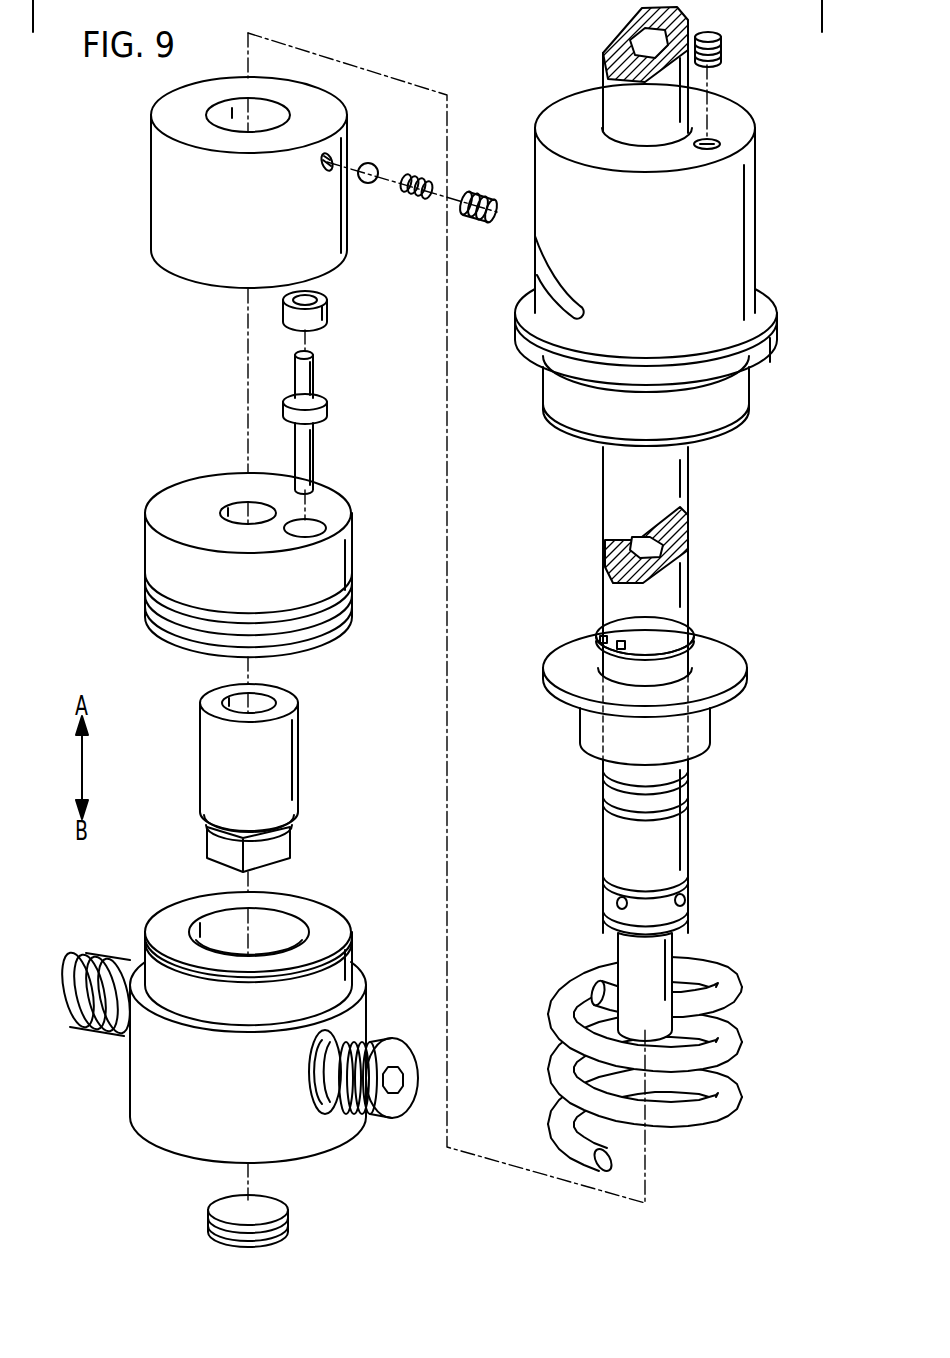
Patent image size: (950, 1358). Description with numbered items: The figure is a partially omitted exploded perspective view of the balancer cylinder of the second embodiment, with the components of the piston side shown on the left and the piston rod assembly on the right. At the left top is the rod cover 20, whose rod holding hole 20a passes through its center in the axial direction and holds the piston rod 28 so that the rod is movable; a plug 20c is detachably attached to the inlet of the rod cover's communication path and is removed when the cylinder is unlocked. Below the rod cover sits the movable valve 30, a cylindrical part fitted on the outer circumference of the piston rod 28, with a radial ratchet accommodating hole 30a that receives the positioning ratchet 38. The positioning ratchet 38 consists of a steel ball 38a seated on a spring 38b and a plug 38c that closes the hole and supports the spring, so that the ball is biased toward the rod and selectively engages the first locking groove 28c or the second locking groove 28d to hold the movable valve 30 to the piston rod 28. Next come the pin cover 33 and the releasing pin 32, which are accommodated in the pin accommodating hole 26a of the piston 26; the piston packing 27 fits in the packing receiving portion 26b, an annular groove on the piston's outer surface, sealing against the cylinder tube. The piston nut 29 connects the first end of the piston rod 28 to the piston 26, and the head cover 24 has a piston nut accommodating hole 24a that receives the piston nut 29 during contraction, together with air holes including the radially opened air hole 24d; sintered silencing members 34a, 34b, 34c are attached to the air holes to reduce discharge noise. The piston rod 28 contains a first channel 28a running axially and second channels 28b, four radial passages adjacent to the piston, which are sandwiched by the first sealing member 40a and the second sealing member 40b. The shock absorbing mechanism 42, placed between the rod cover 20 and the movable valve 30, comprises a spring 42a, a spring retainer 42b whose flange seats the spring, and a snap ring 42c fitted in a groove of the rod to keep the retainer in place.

The rod cover 20 is at (757, 148).
The rod holding hole 20a is at (590, 120).
The plug 20c is at (722, 52).
The head cover 24 is at (226, 1025).
The piston nut accommodating hole 24a is at (290, 928).
The air hole 24d is at (327, 1092).
The piston 26 is at (259, 563).
The pin accommodating hole 26a is at (318, 525).
The packing receiving portion 26b is at (187, 608).
The piston packing 27 is at (162, 604).
The piston rod 28 is at (647, 520).
The first channel 28a is at (640, 40).
The second channels 28b is at (624, 910).
The first locking groove 28c is at (685, 780).
The second locking groove 28d is at (685, 805).
The piston nut 29 is at (299, 738).
The movable valve 30 is at (150, 157).
The ratchet accommodating hole 30a is at (337, 160).
The releasing pin 32 is at (312, 446).
The pin cover 33 is at (328, 313).
The silencing member 34a is at (228, 1198).
The silencing member 34b is at (101, 948).
The silencing member 34c is at (400, 1060).
The positioning ratchet 38 is at (426, 229).
The steel ball 38a is at (368, 183).
The spring 38b is at (420, 201).
The plug 38c is at (479, 226).
The first sealing member 40a is at (620, 885).
The second sealing member 40b is at (614, 918).
The shock absorbing mechanism 42 is at (615, 895).
The spring 42a is at (558, 1008).
The spring retainer 42b is at (595, 710).
The snap ring 42c is at (598, 634).